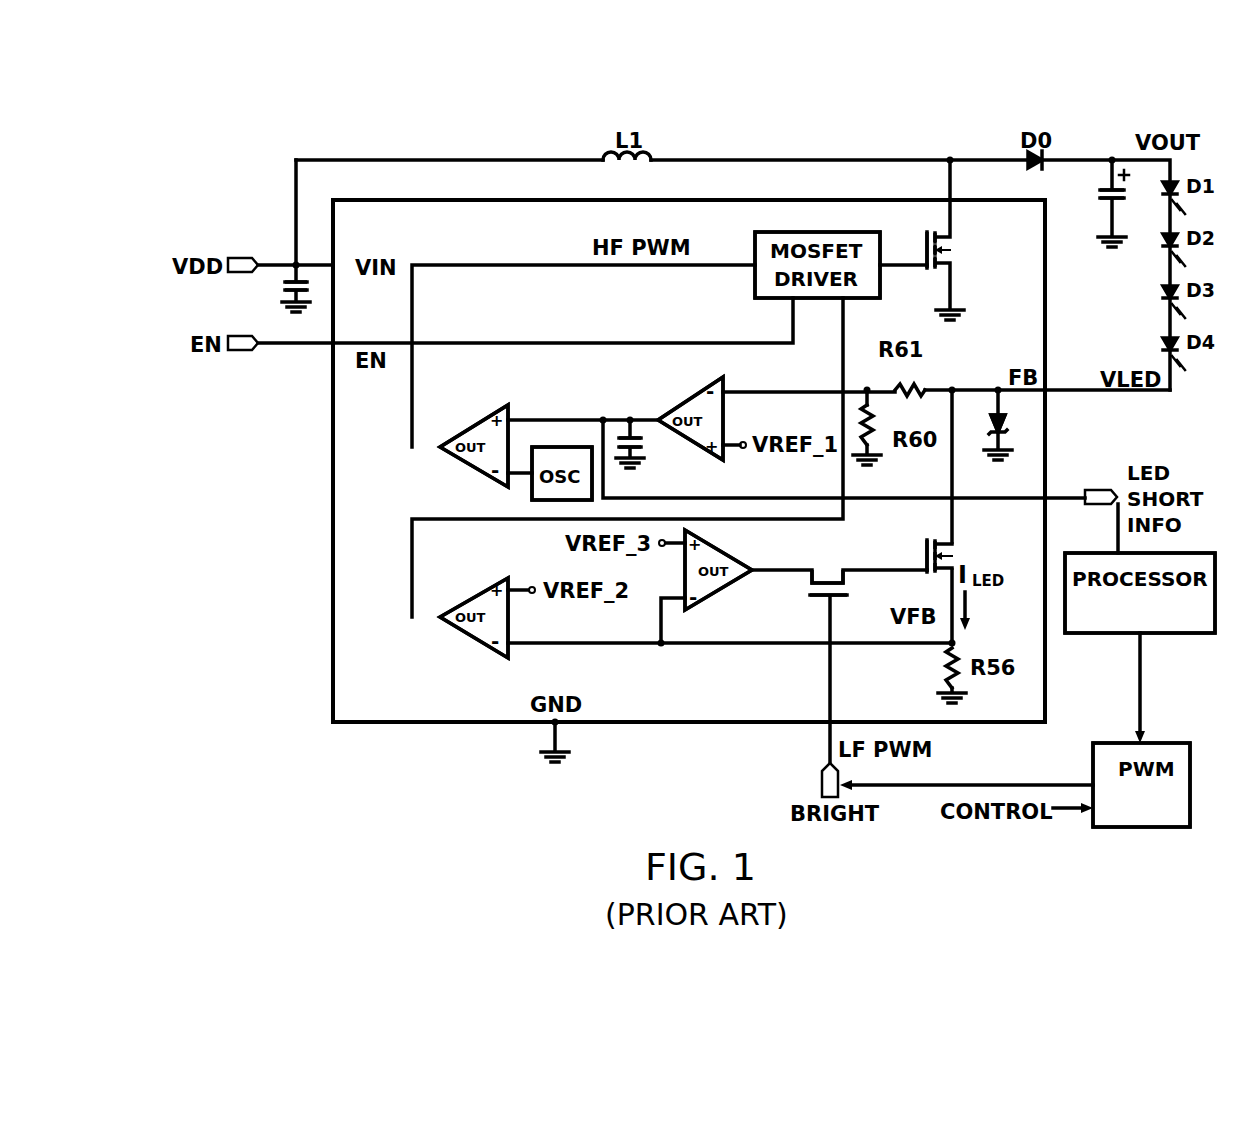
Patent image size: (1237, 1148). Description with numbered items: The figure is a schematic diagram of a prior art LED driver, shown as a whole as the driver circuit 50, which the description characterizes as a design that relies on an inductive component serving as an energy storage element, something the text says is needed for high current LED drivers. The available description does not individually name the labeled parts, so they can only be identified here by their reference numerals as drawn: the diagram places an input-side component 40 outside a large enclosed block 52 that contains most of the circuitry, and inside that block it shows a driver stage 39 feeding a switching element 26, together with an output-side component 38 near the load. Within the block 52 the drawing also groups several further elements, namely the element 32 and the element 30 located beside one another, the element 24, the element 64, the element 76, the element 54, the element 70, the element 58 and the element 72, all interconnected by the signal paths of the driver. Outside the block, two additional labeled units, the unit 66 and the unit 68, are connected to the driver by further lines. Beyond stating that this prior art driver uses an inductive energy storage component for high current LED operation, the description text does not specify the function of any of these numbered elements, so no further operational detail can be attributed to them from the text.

The LED driver circuit 50 is at (255, 183).
The input capacitor 40 is at (290, 284).
The integrated circuit 52 is at (333, 430).
The MOSFET driver 39 is at (755, 246).
The switching MOSFET 26 is at (950, 256).
The output capacitor 38 is at (1100, 194).
The comparator 32 is at (470, 428).
The oscillator 30 is at (532, 495).
The compensation capacitor 24 is at (641, 447).
The error amplifier 64 is at (676, 407).
The zener diode 76 is at (993, 432).
The current control MOSFET 54 is at (927, 546).
The switch 70 is at (822, 576).
The comparator 58 is at (472, 598).
The amplifier 72 is at (728, 588).
The processor 66 is at (1152, 618).
The PWM generator 68 is at (1153, 812).